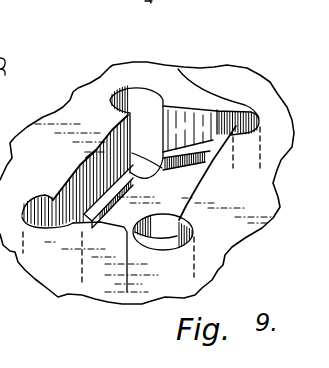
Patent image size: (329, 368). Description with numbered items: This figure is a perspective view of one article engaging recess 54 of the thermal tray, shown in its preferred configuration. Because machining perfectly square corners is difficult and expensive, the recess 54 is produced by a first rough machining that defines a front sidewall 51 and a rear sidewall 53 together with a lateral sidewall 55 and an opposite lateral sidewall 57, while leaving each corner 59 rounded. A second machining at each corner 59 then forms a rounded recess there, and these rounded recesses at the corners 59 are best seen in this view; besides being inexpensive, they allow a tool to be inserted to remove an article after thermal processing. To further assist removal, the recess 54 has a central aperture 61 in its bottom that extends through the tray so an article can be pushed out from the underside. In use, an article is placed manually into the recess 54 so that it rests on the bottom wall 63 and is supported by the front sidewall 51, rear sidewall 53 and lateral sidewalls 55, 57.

The front sidewall 51 is at (191, 191).
The rear sidewall 53 is at (88, 182).
The recess 54 is at (106, 134).
The lateral sidewall 55 is at (120, 228).
The lateral sidewall 57 is at (199, 118).
The corner 59 is at (146, 103).
The central aperture 61 is at (168, 232).
The bottom wall 63 is at (179, 196).